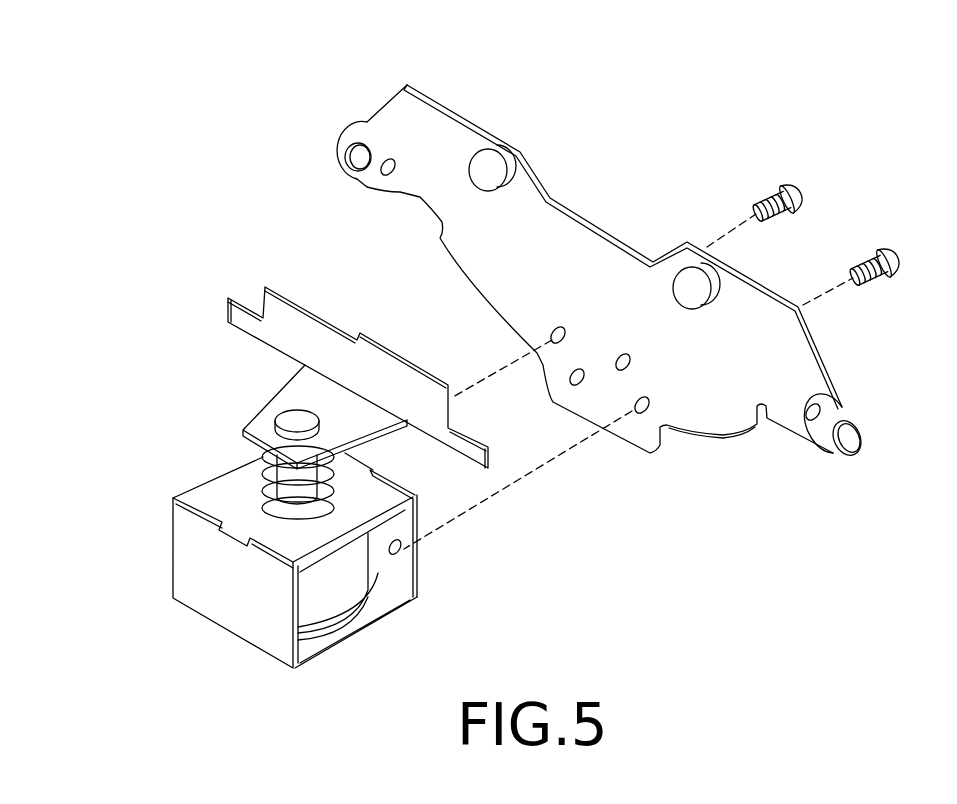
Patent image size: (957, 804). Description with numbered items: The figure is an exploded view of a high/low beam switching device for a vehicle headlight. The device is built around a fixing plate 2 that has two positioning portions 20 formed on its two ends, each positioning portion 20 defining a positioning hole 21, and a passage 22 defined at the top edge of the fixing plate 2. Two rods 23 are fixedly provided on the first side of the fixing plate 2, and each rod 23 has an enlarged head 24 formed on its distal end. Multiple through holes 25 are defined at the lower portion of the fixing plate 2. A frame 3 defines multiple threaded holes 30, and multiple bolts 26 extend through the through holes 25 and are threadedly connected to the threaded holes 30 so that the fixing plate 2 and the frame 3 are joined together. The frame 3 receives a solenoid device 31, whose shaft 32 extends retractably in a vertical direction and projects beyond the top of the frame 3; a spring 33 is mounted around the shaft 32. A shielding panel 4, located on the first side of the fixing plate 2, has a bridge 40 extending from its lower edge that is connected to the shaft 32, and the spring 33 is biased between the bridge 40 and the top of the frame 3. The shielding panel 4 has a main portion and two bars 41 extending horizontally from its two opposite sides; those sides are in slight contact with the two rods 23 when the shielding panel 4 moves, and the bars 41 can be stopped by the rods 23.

The fixing plate 2 is at (716, 438).
The positioning portion 20 is at (343, 138).
The positioning hole 21 is at (355, 158).
The passage 22 is at (617, 232).
The rod 23 is at (513, 143).
The enlarged head 24 is at (482, 155).
The through hole 25 is at (642, 412).
The bolt 26 is at (786, 190).
The frame 3 is at (240, 641).
The threaded hole 30 is at (403, 552).
The solenoid device 31 is at (350, 600).
The shaft 32 is at (270, 507).
The spring 33 is at (292, 482).
The shielding panel 4 is at (333, 313).
The bridge 40 is at (287, 398).
The bar 41 is at (230, 310).